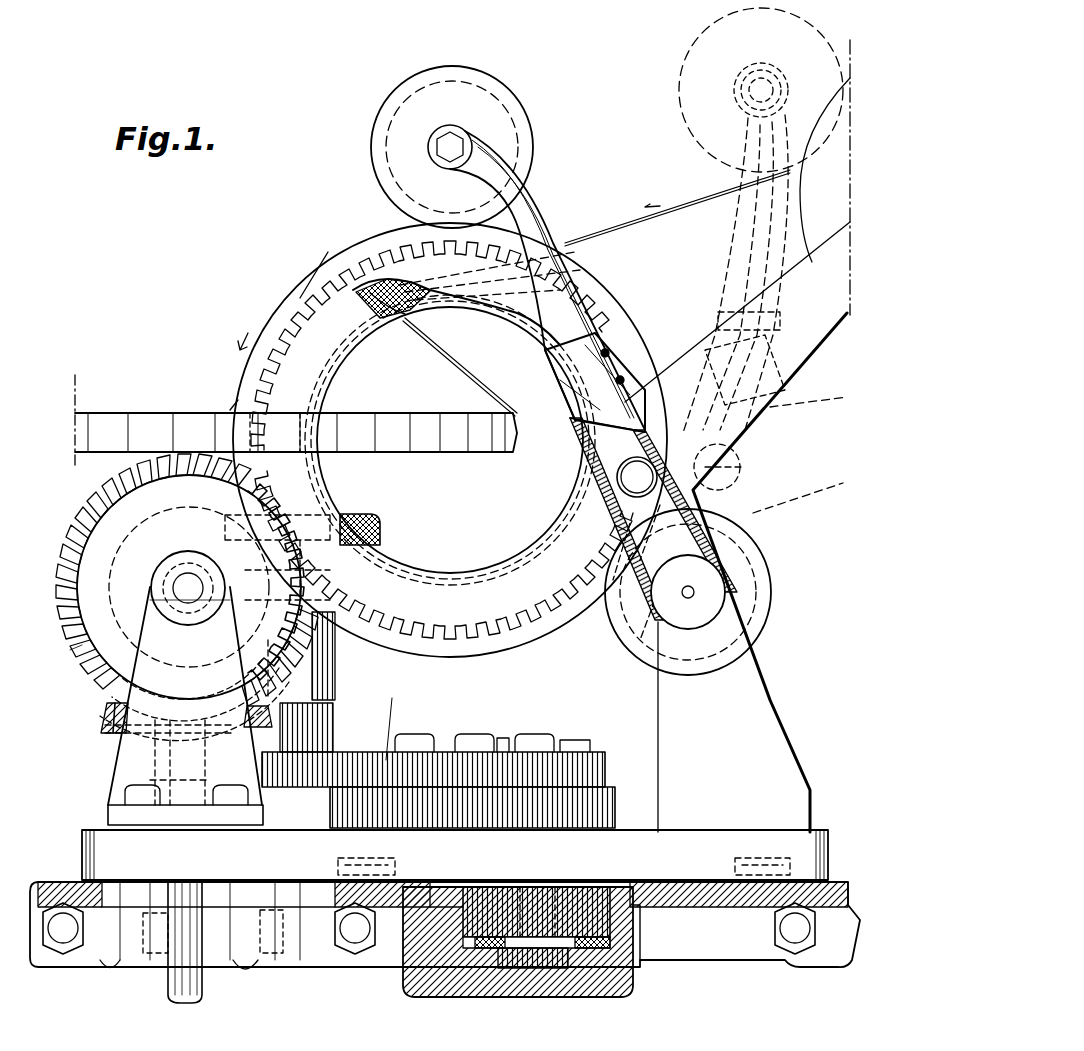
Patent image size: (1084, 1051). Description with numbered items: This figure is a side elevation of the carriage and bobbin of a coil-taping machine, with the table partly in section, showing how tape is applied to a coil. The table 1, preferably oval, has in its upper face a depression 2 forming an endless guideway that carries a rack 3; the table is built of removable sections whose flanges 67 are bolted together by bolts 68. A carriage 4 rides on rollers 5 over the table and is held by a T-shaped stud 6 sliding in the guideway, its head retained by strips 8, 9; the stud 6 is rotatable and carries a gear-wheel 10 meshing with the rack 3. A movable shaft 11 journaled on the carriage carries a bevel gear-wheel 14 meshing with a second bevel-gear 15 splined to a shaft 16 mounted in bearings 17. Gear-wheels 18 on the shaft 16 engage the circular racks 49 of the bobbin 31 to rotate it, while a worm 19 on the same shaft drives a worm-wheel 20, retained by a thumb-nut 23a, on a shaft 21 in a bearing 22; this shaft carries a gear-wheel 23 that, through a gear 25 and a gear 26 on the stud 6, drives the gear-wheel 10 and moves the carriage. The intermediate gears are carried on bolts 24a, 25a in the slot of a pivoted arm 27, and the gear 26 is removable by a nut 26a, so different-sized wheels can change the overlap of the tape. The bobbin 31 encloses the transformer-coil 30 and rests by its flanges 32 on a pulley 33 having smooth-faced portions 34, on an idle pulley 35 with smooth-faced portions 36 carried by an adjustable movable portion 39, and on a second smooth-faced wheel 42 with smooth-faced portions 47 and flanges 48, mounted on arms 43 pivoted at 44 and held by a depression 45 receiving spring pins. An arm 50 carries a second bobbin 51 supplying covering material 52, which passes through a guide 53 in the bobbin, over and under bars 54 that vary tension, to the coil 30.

The table 1 is at (715, 930).
The depression 2 is at (636, 940).
The rack 3 is at (445, 940).
The carriage 4 is at (455, 855).
The rollers 5 is at (795, 848).
The T-shaped stud 6 is at (535, 970).
The strip 8 is at (590, 950).
The strip 9 is at (483, 950).
The gear-wheel 10 is at (585, 895).
The movable shaft 11 is at (202, 985).
The bevel gear-wheel 14 is at (101, 717).
The second bevel-gear 15 is at (110, 690).
The shaft 16 is at (186, 597).
The bearings 17 is at (200, 598).
The gear-wheels 18 is at (150, 510).
The worm 19 is at (188, 550).
The worm-wheel 20 is at (304, 592).
The shaft 21 is at (300, 724).
The bearing 22 is at (336, 690).
The gear-wheel 23 is at (270, 775).
The thumb-nut 23a is at (382, 528).
The bolt 24a is at (414, 740).
The gear 25 is at (470, 745).
The bolt 25a is at (505, 745).
The gear 26 is at (545, 762).
The nut 26a is at (540, 742).
The pivoted arm 27 is at (393, 719).
The transformer-coil 30 is at (362, 420).
The bobbin 31 is at (552, 478).
The flanges 32 is at (450, 690).
The pulley 33 is at (62, 661).
The smooth-faced portions 34 is at (140, 540).
The idle pulley 35 is at (771, 578).
The smooth-faced portions 36 is at (757, 605).
The movable portion 39 is at (762, 790).
The second smooth-faced wheel 42 is at (432, 147).
The arms 43 is at (527, 190).
The pivot 44 is at (688, 598).
The depression 45 is at (740, 470).
The smooth-faced portions 47 is at (452, 147).
The flanges 48 is at (533, 135).
The circular racks 49 is at (570, 572).
The arm 50 is at (737, 276).
The second bobbin 51 is at (761, 220).
The covering material 52 is at (600, 210).
The guide 53 is at (410, 300).
The bars 54 is at (385, 335).
The flanges 67 is at (680, 930).
The bolts 68 is at (770, 985).